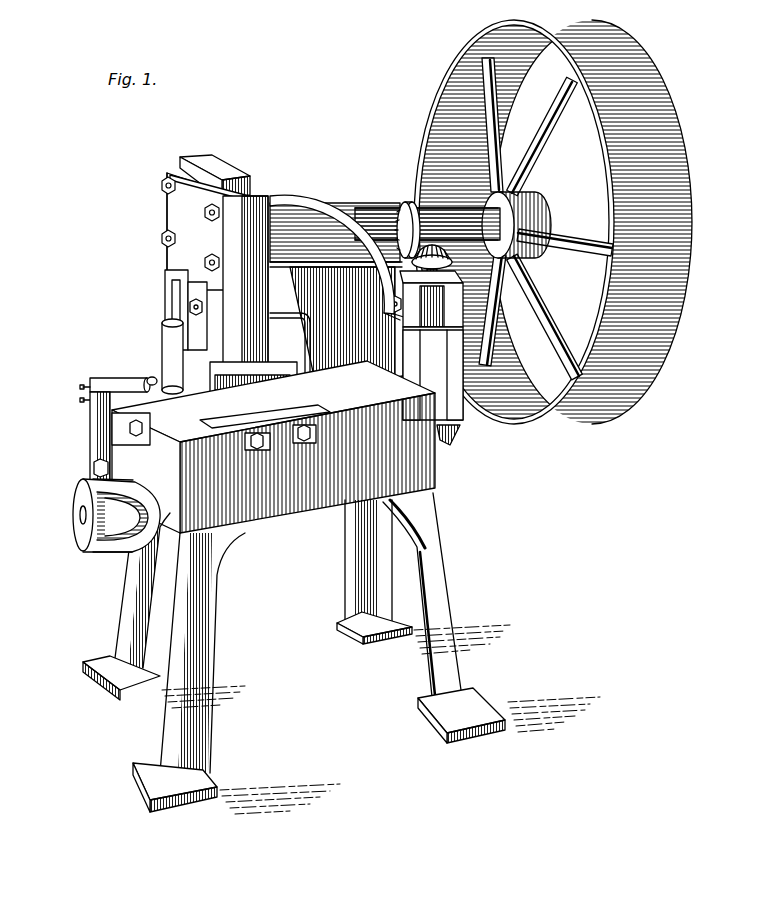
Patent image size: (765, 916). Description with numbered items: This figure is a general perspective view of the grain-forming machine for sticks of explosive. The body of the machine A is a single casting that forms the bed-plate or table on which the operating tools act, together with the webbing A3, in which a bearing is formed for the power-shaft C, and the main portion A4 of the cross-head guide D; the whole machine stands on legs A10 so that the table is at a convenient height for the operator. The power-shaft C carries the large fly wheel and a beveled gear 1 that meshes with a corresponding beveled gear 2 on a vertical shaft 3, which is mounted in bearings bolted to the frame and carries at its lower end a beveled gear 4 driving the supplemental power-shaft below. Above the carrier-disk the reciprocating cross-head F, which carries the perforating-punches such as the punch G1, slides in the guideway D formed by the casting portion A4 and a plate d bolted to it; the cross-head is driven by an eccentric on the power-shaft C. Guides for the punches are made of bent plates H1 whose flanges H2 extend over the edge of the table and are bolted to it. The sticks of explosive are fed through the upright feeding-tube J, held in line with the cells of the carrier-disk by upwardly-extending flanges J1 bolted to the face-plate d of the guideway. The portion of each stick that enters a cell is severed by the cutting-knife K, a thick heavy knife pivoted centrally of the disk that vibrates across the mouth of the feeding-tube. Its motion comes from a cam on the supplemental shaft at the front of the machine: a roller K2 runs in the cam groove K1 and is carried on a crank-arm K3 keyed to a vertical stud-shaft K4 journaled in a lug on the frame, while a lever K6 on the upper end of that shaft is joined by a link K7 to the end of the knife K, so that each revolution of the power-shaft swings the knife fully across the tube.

The power-shaft C is at (448, 218).
The reciprocating cross-head F is at (212, 155).
The plate d is at (164, 212).
The webbing A3 is at (336, 210).
The main portion of the cross-head guide A4 is at (285, 200).
The cross-head guide D is at (252, 199).
The beveled gear 1 is at (405, 204).
The beveled gear 2 is at (454, 262).
The vertical shaft 3 is at (414, 336).
The beveled gear 4 is at (446, 444).
The perforating-punch G1 is at (267, 365).
The upwardly-extending flanges J1 is at (165, 289).
The feeding-tube J is at (162, 346).
The body of the machine A is at (273, 449).
The legs A10 is at (212, 729).
The bent plates H1 is at (212, 426).
The flanges H2 is at (318, 434).
The lever K6 is at (106, 378).
The vertical stud-shaft K4 is at (91, 437).
The crank-arm K3 is at (94, 468).
The cutting-knife K is at (168, 443).
The roller K2 is at (80, 495).
The groove K1 is at (106, 550).
The link K7 is at (152, 377).